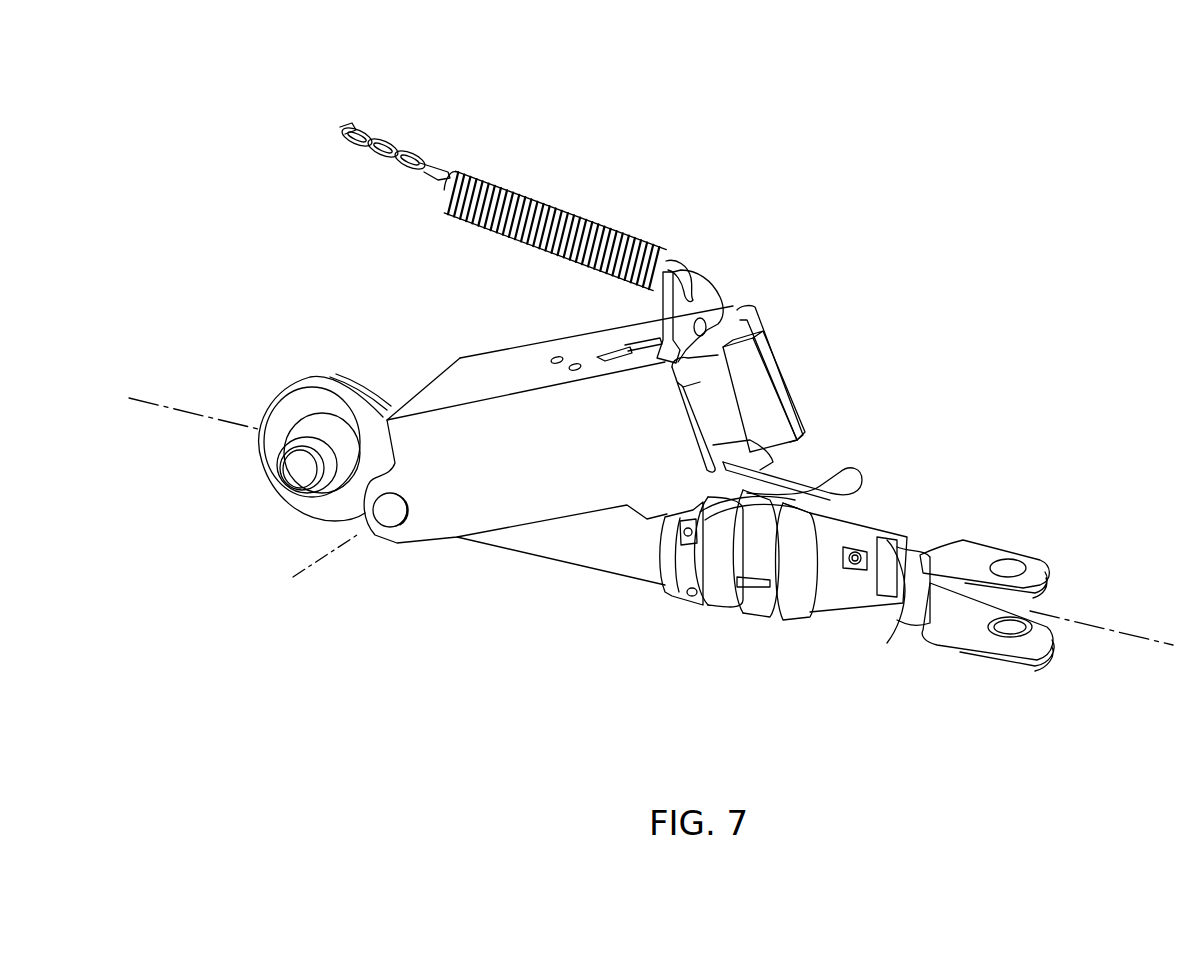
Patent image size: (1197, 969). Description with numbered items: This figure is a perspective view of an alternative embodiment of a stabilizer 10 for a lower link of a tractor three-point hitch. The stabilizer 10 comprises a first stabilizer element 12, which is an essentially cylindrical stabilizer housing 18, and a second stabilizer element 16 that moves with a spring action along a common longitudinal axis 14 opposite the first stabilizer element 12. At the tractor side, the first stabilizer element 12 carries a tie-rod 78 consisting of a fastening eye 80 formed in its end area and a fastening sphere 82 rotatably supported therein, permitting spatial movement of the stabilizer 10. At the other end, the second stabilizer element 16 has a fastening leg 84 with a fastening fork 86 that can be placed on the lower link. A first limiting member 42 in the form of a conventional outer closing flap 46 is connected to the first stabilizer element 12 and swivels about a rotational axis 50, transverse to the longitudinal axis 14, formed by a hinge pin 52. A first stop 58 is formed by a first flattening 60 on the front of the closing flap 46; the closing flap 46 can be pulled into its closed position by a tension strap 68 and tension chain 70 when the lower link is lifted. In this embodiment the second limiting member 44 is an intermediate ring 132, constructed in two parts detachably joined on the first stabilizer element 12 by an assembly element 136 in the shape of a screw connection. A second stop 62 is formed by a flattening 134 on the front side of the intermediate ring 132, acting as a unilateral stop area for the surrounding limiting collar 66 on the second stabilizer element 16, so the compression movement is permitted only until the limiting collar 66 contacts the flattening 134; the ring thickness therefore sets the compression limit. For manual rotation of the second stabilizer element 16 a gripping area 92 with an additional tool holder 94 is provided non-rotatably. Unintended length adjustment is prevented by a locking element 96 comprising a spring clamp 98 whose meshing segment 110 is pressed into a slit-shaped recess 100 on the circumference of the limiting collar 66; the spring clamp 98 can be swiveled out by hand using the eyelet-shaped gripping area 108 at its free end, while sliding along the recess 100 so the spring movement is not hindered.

The stabilizer 10 is at (905, 148).
The first stabilizer element 12 is at (453, 612).
The longitudinal axis 14 is at (1150, 640).
The second stabilizer element 16 is at (900, 655).
The stabilizer housing 18 is at (535, 537).
The first limiting member 42 is at (548, 434).
The second limiting member 44 is at (655, 567).
The outer closing flap 46 is at (487, 370).
The rotational axis 50 is at (293, 577).
The hinge pin 52 is at (395, 515).
The first stop 58 is at (802, 380).
The first flattening 60 is at (765, 355).
The second stop 62 is at (830, 454).
The limiting collar 66 is at (755, 610).
The tension strap 68 is at (705, 292).
The tension chain 70 is at (380, 145).
The tie-rod 78 is at (272, 487).
The fastening eye 80 is at (297, 400).
The fastening sphere 82 is at (320, 430).
The fastening leg 84 is at (987, 554).
The fastening fork 86 is at (1045, 562).
The gripping area 92 is at (897, 578).
The tool holder 94 is at (920, 540).
The locking element 96 is at (852, 455).
The spring clamp 98 is at (830, 454).
The recess 100 is at (735, 512).
The gripping area 108 is at (868, 480).
The meshing segment 110 is at (712, 495).
The intermediate ring 132 is at (645, 588).
The flattening 134 is at (718, 597).
The assembly element 136 is at (652, 553).